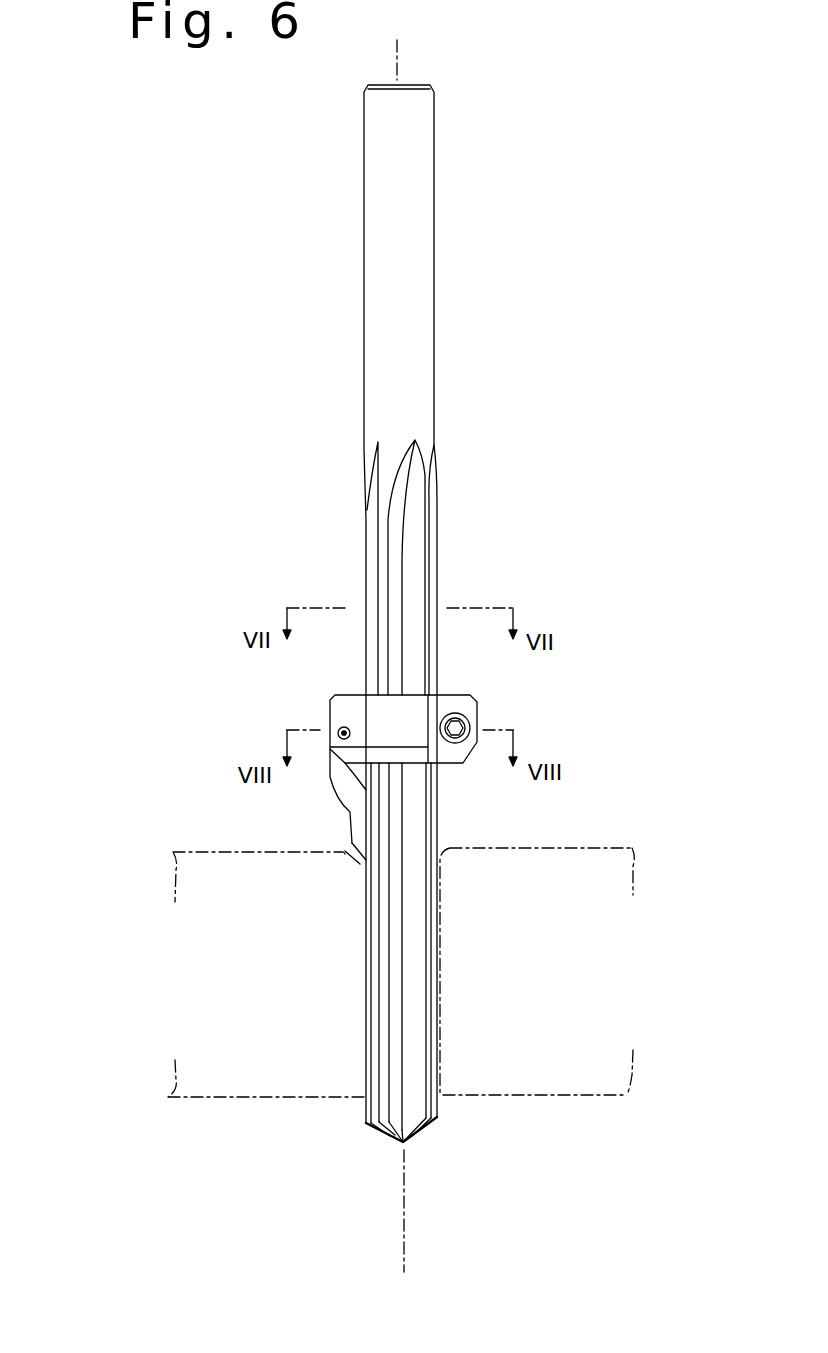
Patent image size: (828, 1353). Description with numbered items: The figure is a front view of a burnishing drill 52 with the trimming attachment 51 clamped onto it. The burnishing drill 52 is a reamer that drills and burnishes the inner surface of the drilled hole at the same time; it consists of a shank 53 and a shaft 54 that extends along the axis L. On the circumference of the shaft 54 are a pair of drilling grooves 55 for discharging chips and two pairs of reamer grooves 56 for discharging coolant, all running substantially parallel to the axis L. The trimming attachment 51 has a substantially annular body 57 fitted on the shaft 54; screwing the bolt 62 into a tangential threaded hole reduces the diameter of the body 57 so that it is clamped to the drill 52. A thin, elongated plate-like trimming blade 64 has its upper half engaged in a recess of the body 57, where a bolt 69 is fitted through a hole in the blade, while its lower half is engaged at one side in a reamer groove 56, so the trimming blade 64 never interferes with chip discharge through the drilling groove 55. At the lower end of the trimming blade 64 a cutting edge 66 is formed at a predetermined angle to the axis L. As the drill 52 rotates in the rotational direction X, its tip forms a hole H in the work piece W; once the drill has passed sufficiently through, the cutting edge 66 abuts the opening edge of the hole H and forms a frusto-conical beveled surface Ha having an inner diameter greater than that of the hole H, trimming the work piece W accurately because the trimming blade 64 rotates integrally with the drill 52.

The trimming attachment 51 is at (400, 772).
The burnishing drill 52 is at (423, 262).
The shank 53 is at (423, 385).
The shaft 54 is at (437, 556).
The drilling grooves 55 is at (418, 1128).
The reamer grooves 56 is at (438, 1117).
The body 57 is at (352, 705).
The bolt 62 is at (455, 737).
The trimming blade 64 is at (353, 792).
The cutting edge 66 is at (360, 862).
The bolt 69 is at (338, 728).
The work piece W is at (568, 862).
The beveled surface Ha is at (475, 840).
The hole H is at (440, 972).
The rotational direction X is at (389, 1218).
The axis L is at (410, 1258).